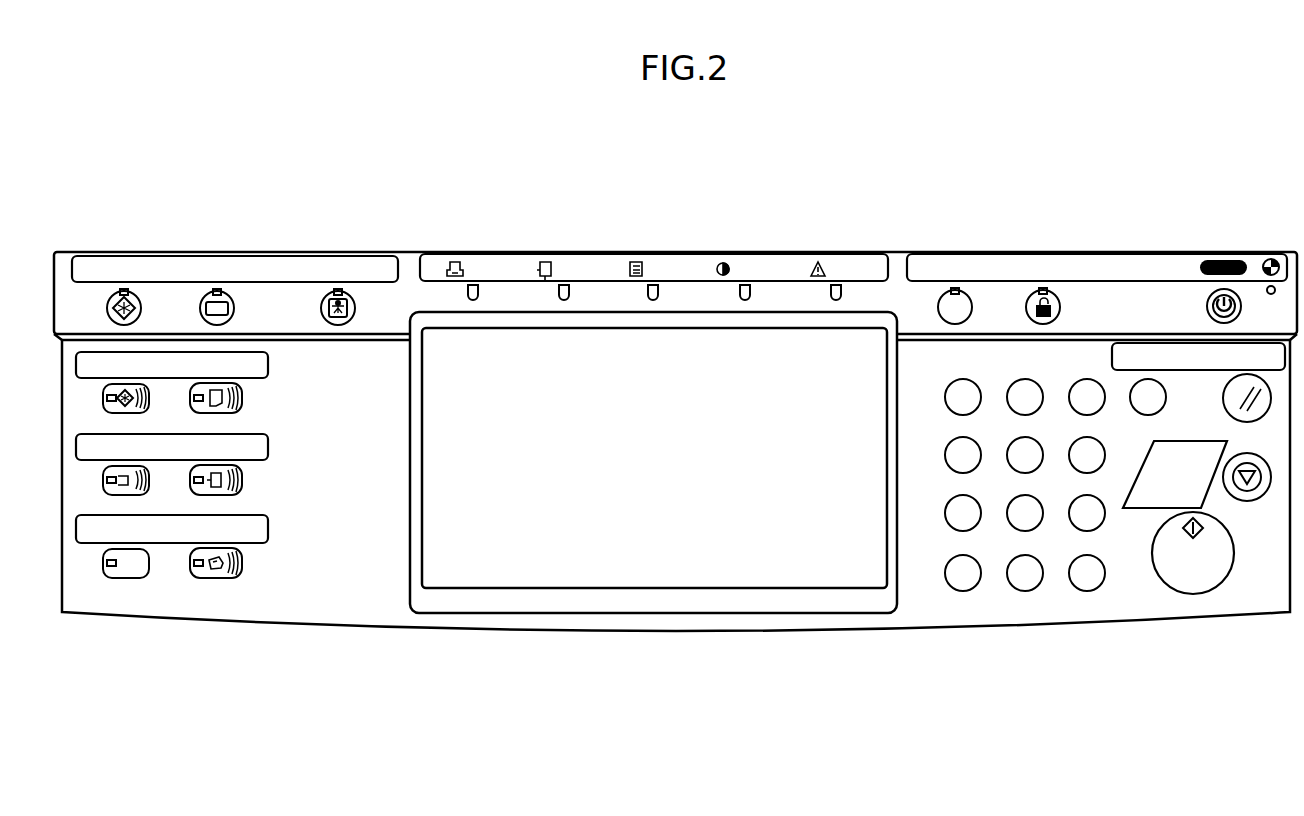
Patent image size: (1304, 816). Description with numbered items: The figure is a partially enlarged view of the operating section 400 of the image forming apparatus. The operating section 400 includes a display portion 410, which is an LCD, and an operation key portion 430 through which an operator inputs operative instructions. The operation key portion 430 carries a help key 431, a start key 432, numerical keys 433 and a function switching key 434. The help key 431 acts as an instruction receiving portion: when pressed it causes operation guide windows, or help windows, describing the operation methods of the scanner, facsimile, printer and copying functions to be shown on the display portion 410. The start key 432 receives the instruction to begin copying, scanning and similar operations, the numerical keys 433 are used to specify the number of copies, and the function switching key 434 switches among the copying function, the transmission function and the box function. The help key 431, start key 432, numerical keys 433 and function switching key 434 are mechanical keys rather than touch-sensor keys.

The operating section 400 is at (918, 168).
The display portion 410 is at (557, 563).
The operation key portion 430 is at (1263, 586).
The help key 431 is at (973, 304).
The start key 432 is at (1187, 576).
The numerical keys 433 is at (935, 598).
The function switching key 434 is at (276, 580).